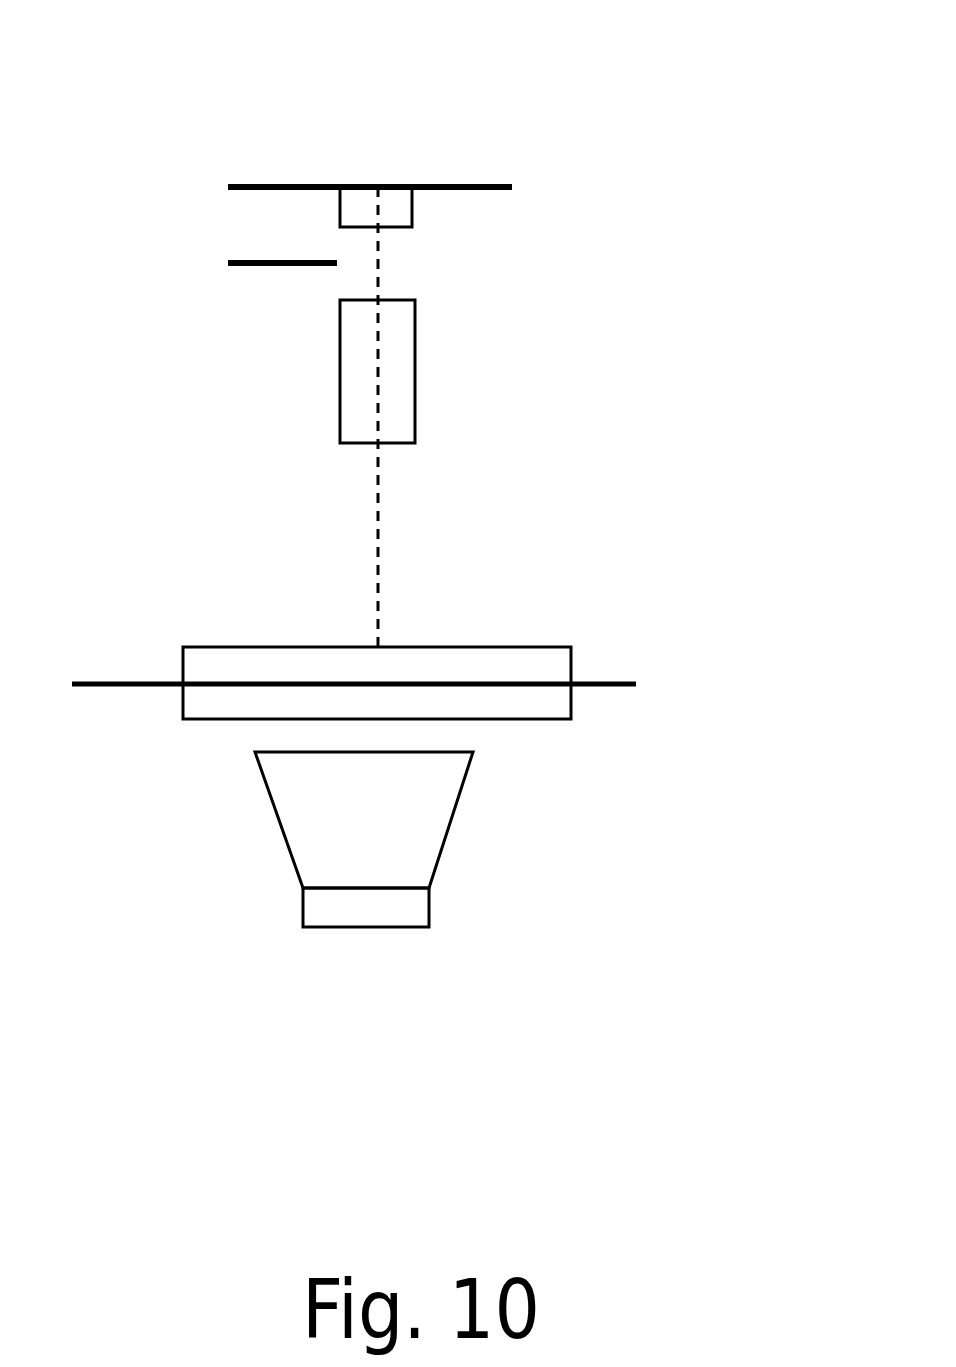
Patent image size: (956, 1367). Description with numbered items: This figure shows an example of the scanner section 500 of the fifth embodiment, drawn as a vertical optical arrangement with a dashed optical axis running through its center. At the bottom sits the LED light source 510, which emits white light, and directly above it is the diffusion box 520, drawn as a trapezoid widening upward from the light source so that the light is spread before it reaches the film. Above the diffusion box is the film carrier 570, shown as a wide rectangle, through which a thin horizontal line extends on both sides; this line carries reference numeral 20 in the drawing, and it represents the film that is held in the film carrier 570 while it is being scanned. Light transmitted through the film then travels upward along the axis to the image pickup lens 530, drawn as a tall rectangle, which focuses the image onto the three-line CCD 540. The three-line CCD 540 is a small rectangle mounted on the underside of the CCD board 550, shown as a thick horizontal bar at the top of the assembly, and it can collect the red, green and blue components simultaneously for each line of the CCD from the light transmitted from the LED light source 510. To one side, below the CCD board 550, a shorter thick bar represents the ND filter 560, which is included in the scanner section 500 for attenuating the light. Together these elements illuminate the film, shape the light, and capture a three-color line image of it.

The scanner section 500 is at (568, 121).
The LED light source 510 is at (429, 903).
The diffusion box 520 is at (457, 819).
The image pickup lens 530 is at (415, 370).
The 3-line CCD 540 is at (412, 207).
The CCD board 550 is at (470, 184).
The ND filter 560 is at (240, 260).
The film carrier 570 is at (525, 647).
The substrate 20 is at (115, 682).